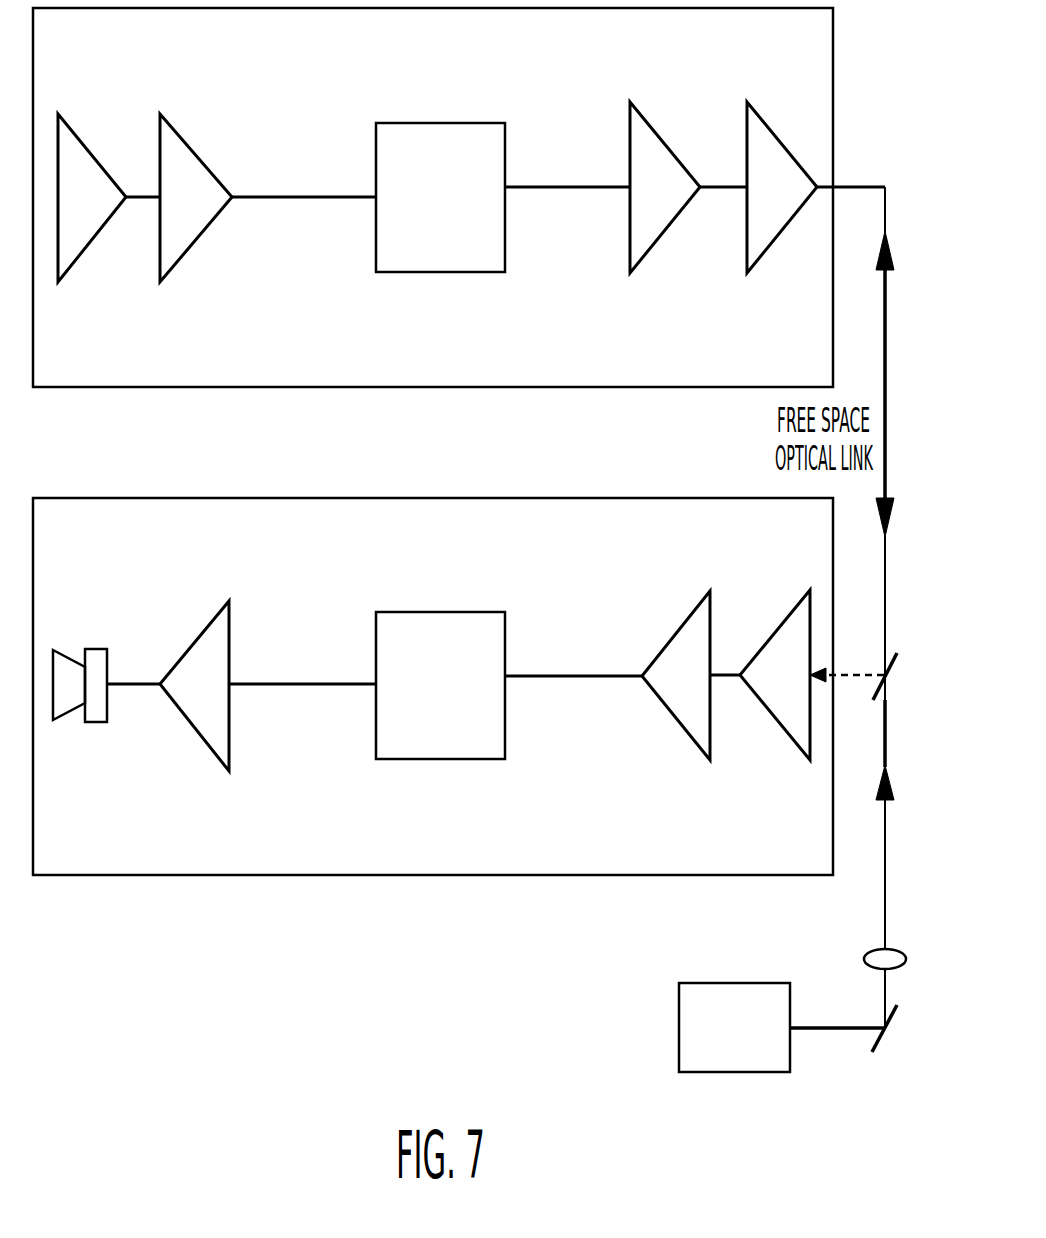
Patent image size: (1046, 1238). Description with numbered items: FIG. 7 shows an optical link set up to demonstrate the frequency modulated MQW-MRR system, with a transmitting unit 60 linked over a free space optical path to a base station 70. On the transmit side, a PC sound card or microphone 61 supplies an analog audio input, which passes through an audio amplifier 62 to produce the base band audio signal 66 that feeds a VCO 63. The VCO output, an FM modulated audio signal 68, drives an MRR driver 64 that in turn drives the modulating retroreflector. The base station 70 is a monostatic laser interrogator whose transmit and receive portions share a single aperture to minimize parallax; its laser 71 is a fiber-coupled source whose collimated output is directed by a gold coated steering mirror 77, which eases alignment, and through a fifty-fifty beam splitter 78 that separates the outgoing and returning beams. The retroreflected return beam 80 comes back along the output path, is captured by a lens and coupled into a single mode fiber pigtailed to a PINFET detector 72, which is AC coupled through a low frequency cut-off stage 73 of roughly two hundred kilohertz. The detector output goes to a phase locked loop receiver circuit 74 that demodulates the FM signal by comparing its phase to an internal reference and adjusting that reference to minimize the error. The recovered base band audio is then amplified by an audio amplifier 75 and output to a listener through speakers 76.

The transmitter / output amplifier 60 is at (313, 96).
The PC sound card or microphone 61 is at (82, 142).
The audio amplifier 62 is at (188, 142).
The VCO 63 is at (440, 123).
The MRR driver 64 is at (655, 130).
The base band audio signal 66 is at (290, 195).
The FM modulated audio signal 68 is at (567, 186).
The base station 70 is at (320, 594).
The laser 71 is at (679, 1028).
The PINFET detector 72 is at (770, 635).
The low frequency cut-off stage 73 is at (670, 640).
The phase locked loop receiver circuit 74 is at (440, 612).
The audio amplifier 75 is at (197, 640).
The speakers 76 is at (68, 650).
The gold coated steering mirror 77 is at (890, 1034).
The beam splitter 78 is at (888, 670).
The return beam 80 is at (862, 682).